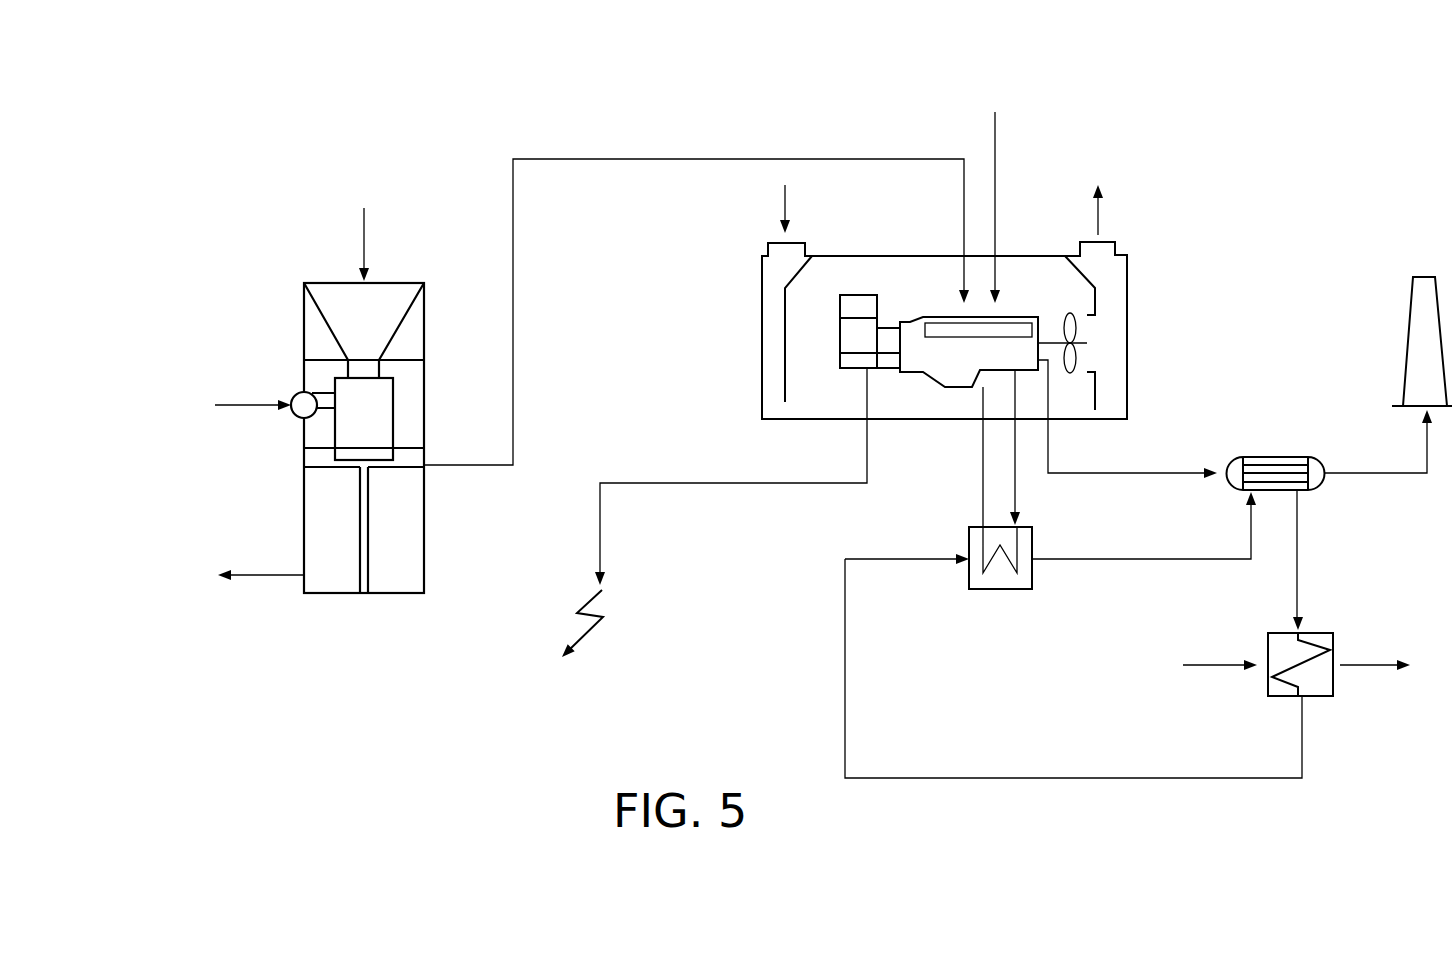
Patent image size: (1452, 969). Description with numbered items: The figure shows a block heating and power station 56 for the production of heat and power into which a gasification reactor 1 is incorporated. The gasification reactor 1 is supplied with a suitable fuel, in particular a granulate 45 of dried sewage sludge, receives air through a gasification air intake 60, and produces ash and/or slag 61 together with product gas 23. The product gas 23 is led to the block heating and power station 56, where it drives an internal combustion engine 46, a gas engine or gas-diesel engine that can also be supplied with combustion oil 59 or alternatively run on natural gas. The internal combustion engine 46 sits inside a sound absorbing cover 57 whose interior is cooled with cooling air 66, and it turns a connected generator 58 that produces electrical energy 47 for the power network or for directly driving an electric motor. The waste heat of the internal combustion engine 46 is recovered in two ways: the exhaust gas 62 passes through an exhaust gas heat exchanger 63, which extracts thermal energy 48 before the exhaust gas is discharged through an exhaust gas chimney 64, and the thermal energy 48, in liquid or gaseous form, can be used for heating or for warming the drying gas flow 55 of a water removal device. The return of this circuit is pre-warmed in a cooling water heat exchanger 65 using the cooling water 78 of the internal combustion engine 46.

The gasification reactor 1 is at (268, 296).
The product gas 23 is at (692, 158).
The granulate 45 is at (363, 227).
The internal combustion engine 46 is at (940, 353).
The electrical energy 47 is at (714, 512).
The thermal energy 48 is at (1300, 585).
The drying gas flow 55 is at (1296, 661).
The block heating and power station 56 is at (1148, 261).
The sound absorbing cover 57 is at (762, 382).
The generator 58 is at (860, 327).
The combustion oil 59 is at (978, 203).
The gasification air intake 60 is at (253, 408).
The ash and/or slag 61 is at (242, 576).
The exhaust gas 62 is at (1140, 473).
The exhaust gas heat exchanger 63 is at (1270, 455).
The exhaust gas chimney 64 is at (1407, 350).
The cooling water heat exchanger 65 is at (1000, 590).
The cooling air 66 is at (783, 202).
The cooling water 78 is at (983, 449).